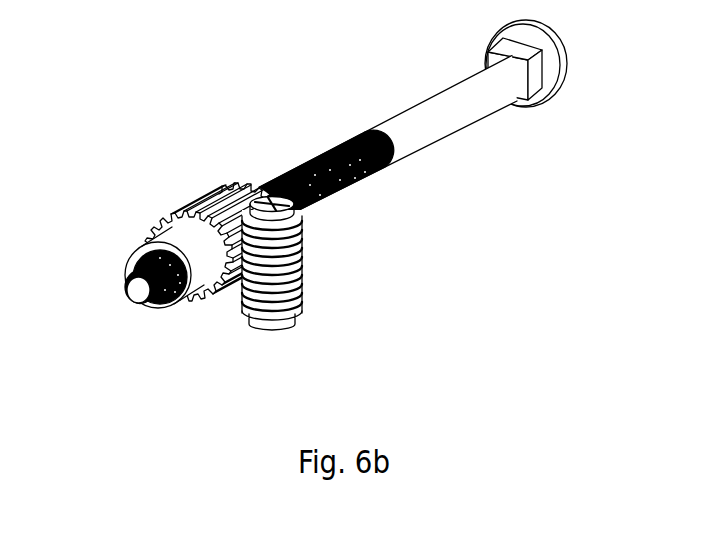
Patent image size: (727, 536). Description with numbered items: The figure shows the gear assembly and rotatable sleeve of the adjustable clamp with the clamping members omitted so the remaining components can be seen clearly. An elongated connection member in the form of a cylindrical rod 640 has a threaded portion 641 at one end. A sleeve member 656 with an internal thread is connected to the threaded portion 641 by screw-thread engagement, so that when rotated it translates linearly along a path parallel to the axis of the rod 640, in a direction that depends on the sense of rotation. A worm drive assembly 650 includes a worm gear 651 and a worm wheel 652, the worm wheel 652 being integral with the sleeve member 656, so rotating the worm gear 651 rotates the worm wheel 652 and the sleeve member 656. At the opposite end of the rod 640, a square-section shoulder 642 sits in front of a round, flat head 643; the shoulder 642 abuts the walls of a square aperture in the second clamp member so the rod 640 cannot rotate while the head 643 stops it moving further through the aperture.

The cylindrical rod 640 is at (418, 123).
The threaded portion 641 is at (328, 157).
The shoulder 642 is at (532, 78).
The head 643 is at (558, 73).
The worm drive assembly 650 is at (239, 255).
The worm gear 651 is at (302, 258).
The worm wheel 652 is at (200, 205).
The sleeve member 656 is at (161, 240).